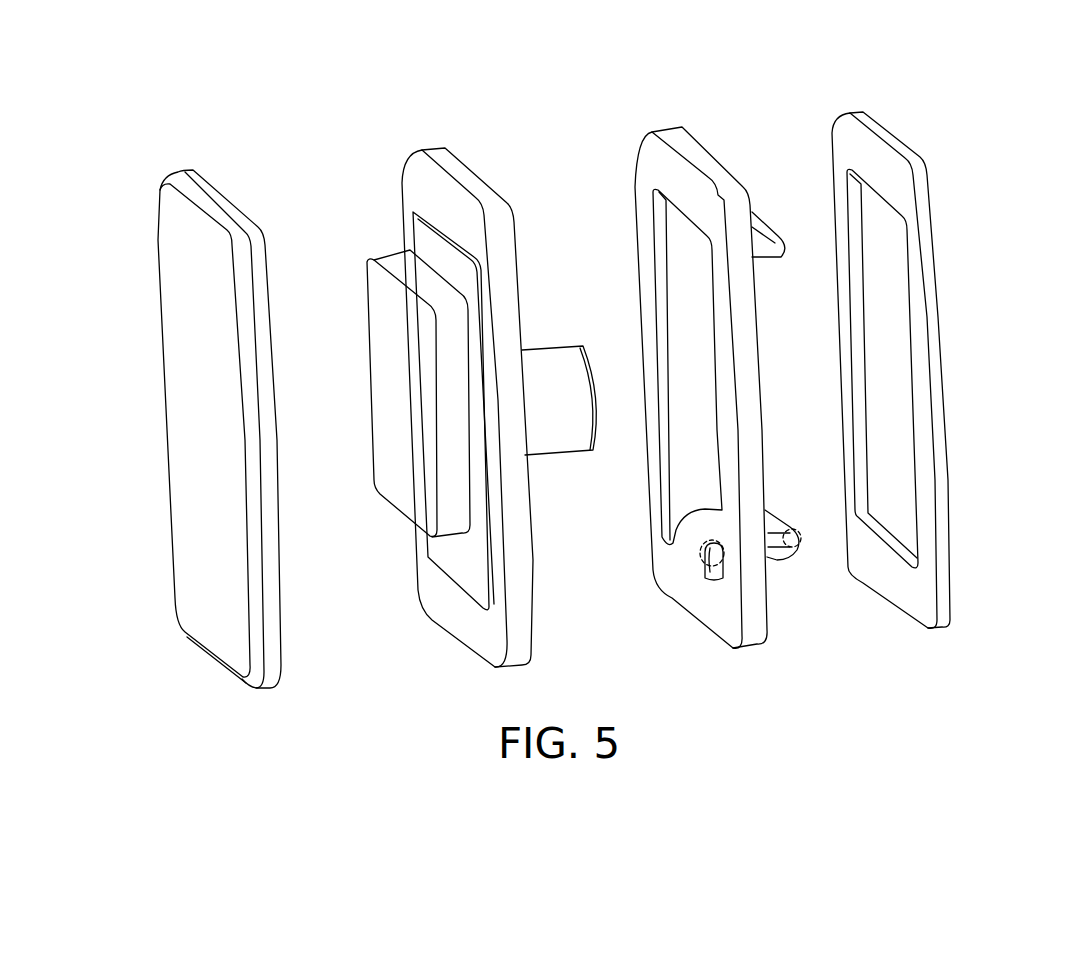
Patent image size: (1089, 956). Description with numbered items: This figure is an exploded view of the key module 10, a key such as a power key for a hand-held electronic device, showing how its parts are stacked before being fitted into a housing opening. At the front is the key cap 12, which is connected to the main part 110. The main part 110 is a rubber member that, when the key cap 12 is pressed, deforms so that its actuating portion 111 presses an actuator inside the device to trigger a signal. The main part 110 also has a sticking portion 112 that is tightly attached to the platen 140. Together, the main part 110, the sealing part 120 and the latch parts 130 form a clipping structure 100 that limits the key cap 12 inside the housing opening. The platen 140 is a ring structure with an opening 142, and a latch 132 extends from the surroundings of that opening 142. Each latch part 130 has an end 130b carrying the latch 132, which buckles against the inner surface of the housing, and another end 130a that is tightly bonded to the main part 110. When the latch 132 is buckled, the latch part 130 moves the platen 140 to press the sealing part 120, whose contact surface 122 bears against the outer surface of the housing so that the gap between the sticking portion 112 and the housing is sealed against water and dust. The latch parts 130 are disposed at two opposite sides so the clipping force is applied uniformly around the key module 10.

The key module 10 is at (978, 112).
The key cap 12 is at (178, 307).
The clipping structure 100 is at (850, 64).
The main part 110 is at (460, 620).
The actuating portion 111 is at (550, 360).
The sticking portion 112 is at (517, 242).
The sealing part 120 is at (932, 302).
The contact surface 122 is at (928, 180).
The latch part 130 is at (697, 537).
The another end of latch part 130a is at (723, 552).
The end of latch part 130b is at (795, 525).
The latch 132 is at (765, 255).
The platen 140 is at (695, 603).
The opening of platen 142 is at (715, 452).